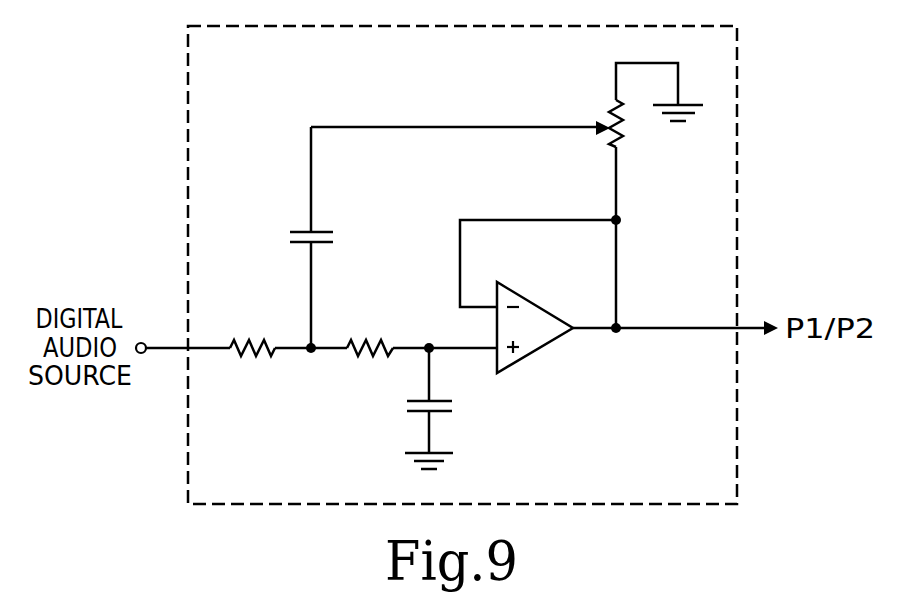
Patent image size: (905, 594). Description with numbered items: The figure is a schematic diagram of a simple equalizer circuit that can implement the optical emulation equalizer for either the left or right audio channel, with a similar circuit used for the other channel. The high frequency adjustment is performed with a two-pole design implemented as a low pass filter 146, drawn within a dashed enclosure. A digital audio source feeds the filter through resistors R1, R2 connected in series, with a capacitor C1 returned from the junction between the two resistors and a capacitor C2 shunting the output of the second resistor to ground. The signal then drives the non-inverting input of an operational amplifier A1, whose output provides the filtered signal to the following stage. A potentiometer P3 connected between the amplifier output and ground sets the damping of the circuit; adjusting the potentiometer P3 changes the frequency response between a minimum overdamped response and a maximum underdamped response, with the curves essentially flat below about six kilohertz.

The low pass filter 146 is at (737, 448).
The resistor R1 is at (252, 366).
The resistor R2 is at (370, 366).
The capacitor C1 is at (331, 237).
The capacitor C2 is at (448, 408).
The operational amplifier A1 is at (538, 340).
The potentiometer P3 is at (635, 195).